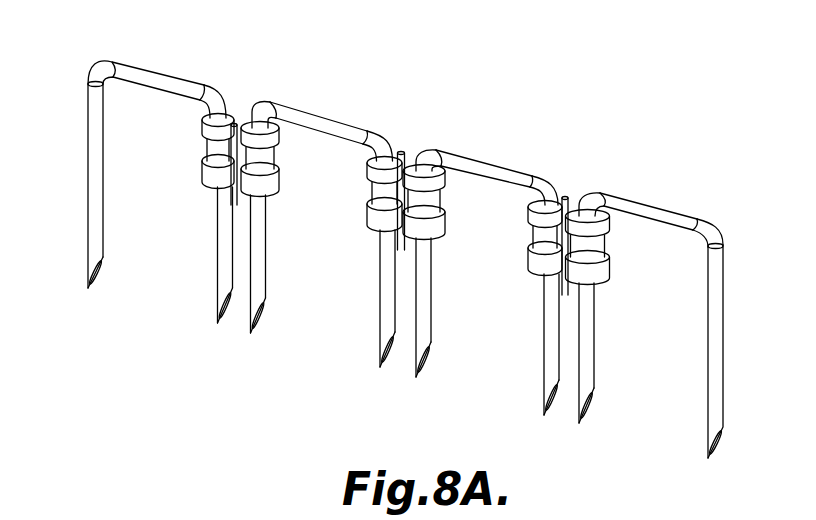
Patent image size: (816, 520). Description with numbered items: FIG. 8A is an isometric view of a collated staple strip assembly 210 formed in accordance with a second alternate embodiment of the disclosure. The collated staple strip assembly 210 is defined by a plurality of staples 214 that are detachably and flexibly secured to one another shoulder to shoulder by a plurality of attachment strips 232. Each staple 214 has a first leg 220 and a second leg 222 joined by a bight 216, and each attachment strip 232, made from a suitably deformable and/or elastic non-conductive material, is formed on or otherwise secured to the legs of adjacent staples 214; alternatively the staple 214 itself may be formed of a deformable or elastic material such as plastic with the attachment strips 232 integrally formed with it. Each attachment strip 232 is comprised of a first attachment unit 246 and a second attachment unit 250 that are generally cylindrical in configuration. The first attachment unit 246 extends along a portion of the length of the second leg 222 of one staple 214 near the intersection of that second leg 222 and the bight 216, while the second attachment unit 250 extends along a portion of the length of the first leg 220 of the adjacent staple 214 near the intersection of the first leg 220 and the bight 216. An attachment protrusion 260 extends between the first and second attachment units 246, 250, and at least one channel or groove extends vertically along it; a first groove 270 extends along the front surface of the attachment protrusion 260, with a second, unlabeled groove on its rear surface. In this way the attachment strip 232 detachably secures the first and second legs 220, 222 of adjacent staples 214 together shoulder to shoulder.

The collated staple strip assembly 210 is at (600, 107).
The bight 216 is at (160, 73).
The attachment strip 232 is at (262, 98).
The first attachment unit 246 is at (207, 147).
The second attachment unit 250 is at (278, 155).
The first groove 270 is at (246, 157).
The attachment protrusion 260 is at (240, 112).
The first leg 220 is at (103, 222).
The second leg 222 is at (217, 277).
The staple 214 is at (90, 294).